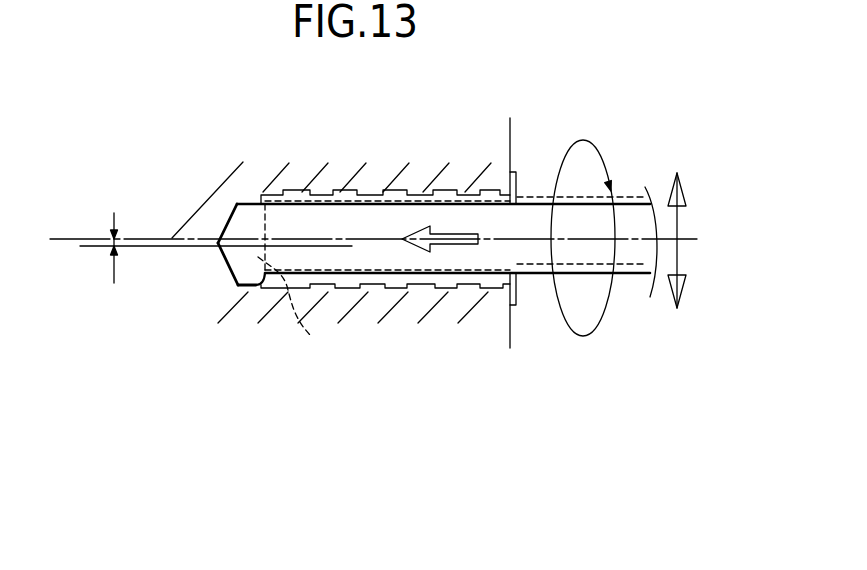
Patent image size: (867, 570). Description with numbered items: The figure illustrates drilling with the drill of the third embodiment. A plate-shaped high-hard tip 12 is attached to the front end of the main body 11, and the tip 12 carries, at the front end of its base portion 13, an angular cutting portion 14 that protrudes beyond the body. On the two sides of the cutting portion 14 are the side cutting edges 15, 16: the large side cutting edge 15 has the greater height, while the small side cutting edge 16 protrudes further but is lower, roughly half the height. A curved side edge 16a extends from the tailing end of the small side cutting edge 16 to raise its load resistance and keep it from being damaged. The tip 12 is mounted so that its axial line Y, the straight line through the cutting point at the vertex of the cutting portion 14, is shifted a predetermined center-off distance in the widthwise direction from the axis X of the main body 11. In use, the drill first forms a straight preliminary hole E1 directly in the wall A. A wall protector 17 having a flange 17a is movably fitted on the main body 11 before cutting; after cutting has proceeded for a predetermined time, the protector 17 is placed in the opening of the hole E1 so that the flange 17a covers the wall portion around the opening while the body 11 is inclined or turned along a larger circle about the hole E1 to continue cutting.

The main body 11 is at (538, 278).
The high-hard tip 12 is at (226, 225).
The base portion 13 is at (296, 315).
The cutting portion 14 is at (228, 283).
The side cutting edge 15 is at (260, 203).
The side cutting edge 16 is at (243, 292).
The curved side edge 16a is at (264, 290).
The wall protector 17 is at (490, 290).
The flange 17a is at (520, 187).
The preliminary hole E1 is at (366, 200).
The wall A is at (512, 144).
The axis X is at (383, 237).
The axial line Y is at (85, 248).